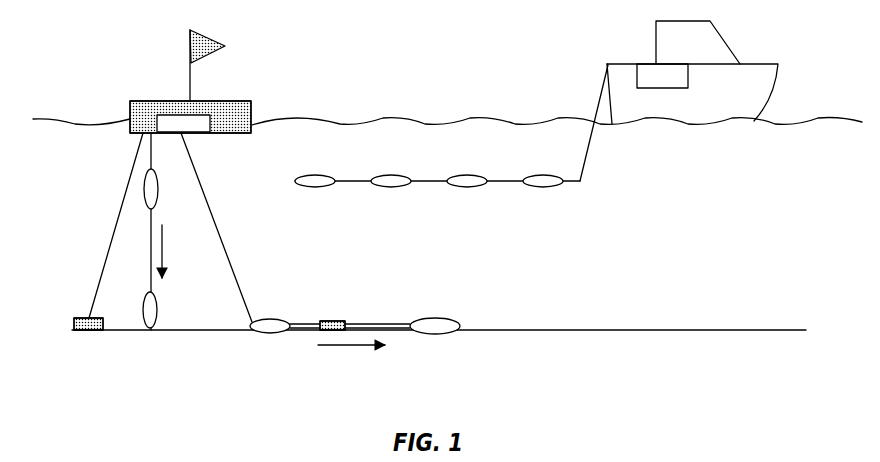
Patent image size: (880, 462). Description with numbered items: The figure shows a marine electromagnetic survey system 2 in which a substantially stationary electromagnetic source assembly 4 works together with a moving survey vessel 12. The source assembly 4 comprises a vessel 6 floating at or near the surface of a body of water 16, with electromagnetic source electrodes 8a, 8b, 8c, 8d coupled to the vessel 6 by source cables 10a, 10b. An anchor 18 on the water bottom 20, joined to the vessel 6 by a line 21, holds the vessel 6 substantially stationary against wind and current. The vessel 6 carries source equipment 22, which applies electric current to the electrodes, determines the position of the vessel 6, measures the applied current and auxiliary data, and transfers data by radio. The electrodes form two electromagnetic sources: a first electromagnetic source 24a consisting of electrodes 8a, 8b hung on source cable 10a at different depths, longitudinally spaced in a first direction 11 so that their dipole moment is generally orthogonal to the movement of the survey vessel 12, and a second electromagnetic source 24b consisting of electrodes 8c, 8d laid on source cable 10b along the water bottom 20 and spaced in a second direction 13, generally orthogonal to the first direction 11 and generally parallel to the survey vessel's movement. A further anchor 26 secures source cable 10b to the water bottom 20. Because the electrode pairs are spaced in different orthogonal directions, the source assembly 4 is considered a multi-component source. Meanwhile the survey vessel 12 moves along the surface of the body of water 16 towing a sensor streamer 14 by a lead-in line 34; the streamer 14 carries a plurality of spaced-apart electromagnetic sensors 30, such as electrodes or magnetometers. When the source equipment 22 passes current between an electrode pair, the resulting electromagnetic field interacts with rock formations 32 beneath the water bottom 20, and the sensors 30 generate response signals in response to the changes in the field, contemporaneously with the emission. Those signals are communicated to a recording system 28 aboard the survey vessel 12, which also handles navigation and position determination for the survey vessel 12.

The marine electromagnetic survey system 2 is at (738, 247).
The electromagnetic source assembly 4 is at (82, 73).
The vessel 6 is at (235, 100).
The electromagnetic source electrode 8a is at (158, 188).
The electromagnetic source electrode 8b is at (157, 310).
The electromagnetic source electrode 8c is at (272, 318).
The electromagnetic source electrode 8d is at (437, 318).
The source cable 10a is at (151, 145).
The source cable 10b is at (227, 250).
The first direction 11 is at (166, 250).
The survey vessel 12 is at (765, 63).
The second direction 13 is at (350, 345).
The sensor streamer 14 is at (505, 183).
The body of water 16 is at (834, 175).
The anchor 18 is at (88, 318).
The water bottom 20 is at (630, 330).
The line 21 is at (100, 272).
The source equipment 22 is at (165, 113).
The first electromagnetic source 24a is at (135, 256).
The second electromagnetic source 24b is at (322, 358).
The anchor 26 is at (333, 320).
The recording system 28 is at (637, 75).
The electromagnetic sensors 30 is at (318, 176).
The rock formations 32 is at (568, 372).
The lead-in line 34 is at (590, 155).